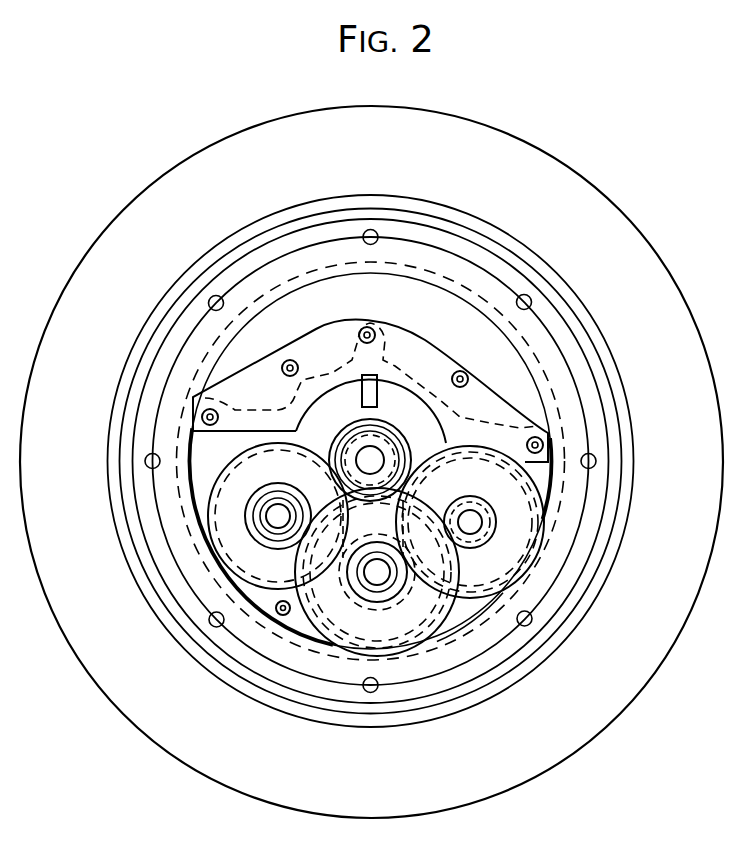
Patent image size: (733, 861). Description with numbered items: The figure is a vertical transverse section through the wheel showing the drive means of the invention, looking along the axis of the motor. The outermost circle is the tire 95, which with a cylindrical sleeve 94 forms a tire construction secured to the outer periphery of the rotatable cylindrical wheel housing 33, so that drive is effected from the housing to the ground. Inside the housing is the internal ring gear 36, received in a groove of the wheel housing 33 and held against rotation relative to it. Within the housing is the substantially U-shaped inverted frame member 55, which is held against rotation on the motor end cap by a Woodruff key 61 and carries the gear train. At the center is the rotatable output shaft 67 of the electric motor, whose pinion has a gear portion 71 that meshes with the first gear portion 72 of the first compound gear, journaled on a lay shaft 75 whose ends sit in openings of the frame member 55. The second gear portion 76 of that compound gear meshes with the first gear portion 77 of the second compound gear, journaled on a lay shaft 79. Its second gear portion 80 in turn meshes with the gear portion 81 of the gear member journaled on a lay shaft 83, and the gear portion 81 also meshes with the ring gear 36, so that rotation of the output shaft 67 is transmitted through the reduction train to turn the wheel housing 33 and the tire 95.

The tire 95 is at (80, 278).
The internal ring gear 36 is at (493, 635).
The cylindrical wheel housing 33 is at (241, 672).
The cylindrical sleeve 94 is at (180, 632).
The frame member 55 is at (475, 395).
The Woodruff key 61 is at (372, 381).
The output shaft 67 is at (371, 461).
The gear portion 71 is at (406, 449).
The first gear portion 72 is at (236, 468).
The lay shaft 75 is at (278, 517).
The second gear portion 76 is at (273, 548).
The first gear portion 77 is at (319, 637).
The lay shaft 79 is at (383, 577).
The second gear portion 80 is at (383, 612).
The gear portion 81 is at (514, 492).
The lay shaft 83 is at (471, 522).